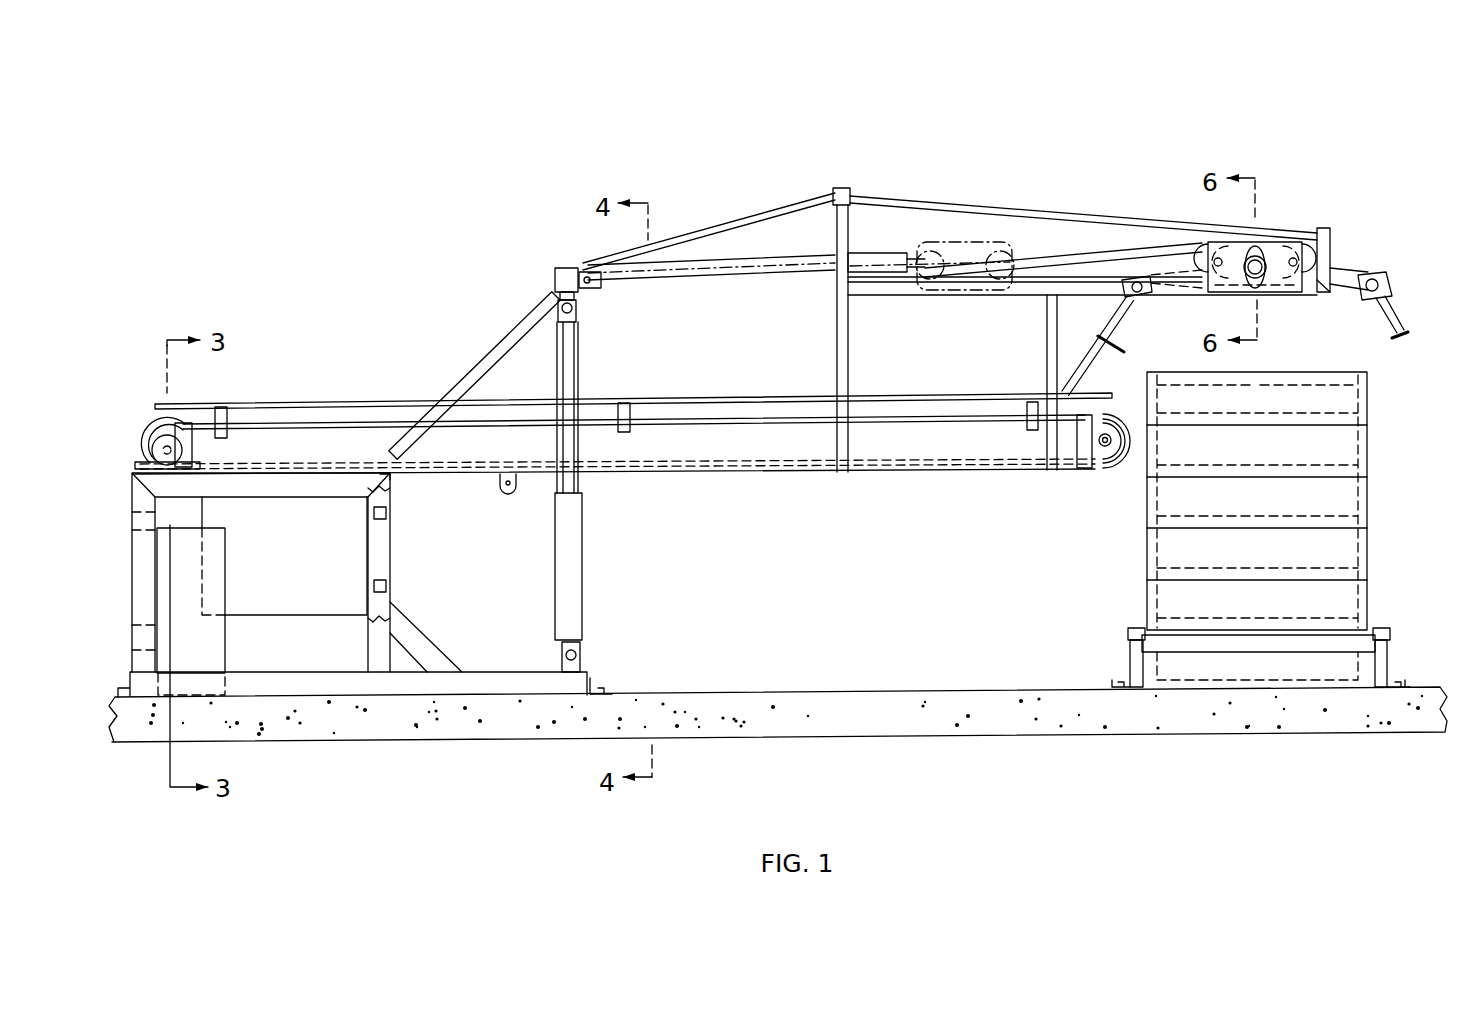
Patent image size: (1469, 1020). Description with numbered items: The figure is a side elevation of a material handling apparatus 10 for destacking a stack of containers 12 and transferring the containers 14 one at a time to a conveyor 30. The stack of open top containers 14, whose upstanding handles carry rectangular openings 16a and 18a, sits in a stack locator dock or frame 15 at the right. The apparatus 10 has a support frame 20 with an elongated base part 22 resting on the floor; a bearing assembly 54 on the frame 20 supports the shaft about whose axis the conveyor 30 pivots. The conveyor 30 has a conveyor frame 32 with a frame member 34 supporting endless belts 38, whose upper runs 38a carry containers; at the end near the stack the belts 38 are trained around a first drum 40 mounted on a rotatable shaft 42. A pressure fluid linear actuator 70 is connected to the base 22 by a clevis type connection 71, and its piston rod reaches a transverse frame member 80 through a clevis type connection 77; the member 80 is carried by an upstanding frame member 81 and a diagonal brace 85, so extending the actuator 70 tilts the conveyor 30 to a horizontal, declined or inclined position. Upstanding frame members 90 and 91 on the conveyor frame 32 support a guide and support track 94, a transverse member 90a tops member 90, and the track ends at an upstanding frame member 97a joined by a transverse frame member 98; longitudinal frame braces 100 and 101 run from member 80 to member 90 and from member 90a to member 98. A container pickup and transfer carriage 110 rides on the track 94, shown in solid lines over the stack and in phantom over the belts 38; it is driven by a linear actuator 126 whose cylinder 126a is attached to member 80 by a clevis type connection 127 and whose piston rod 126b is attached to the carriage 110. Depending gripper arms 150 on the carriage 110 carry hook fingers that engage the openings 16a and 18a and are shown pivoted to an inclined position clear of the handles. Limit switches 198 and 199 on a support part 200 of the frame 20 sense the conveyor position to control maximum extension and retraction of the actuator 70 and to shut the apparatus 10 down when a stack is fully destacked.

The material handling apparatus 10 is at (777, 186).
The stack of containers 12 is at (1272, 525).
The container 14 is at (1368, 433).
The stack locator dock or frame 15 is at (1130, 643).
The rectangular opening 16a is at (1160, 400).
The rectangular opening 18a is at (1355, 400).
The support frame 20 is at (313, 584).
The base part 22 is at (490, 672).
The endless belt type conveyor 30 is at (615, 499).
The conveyor frame 32 is at (685, 481).
The conveyor frame member 34 is at (918, 452).
The endless belt 38 is at (160, 432).
The upper run 38a is at (688, 404).
The first drum 40 is at (1086, 470).
The rotatable shaft 42 is at (1100, 442).
The bearing assembly 54 is at (150, 450).
The pressure fluid cylinder type linear actuator 70 is at (583, 584).
The clevis type connection 71 is at (583, 655).
The clevis type connection 77 is at (556, 300).
The transverse frame member 80 is at (565, 268).
The upstanding frame member 81 is at (580, 347).
The diagonal brace 85 is at (494, 357).
The upstanding frame member 90 is at (850, 335).
The transverse member 90a is at (842, 190).
The upstanding frame member 91 is at (1045, 316).
The guide and support track 94 is at (917, 262).
The upstanding frame member 97a is at (1330, 250).
The transverse frame member 98 is at (1322, 228).
The longitudinal frame brace 100 is at (738, 222).
The longitudinal frame brace 101 is at (946, 200).
The container pickup and transfer carriage 110 is at (1014, 238).
The pressure fluid cylinder and piston type linear actuator 126 is at (711, 276).
The cylinder 126a is at (735, 258).
The piston rod 126b is at (1073, 232).
The clevis type connection 127 is at (590, 296).
The depending gripper arm 150 is at (1116, 300).
The limit switch 198 is at (373, 514).
The limit switch 199 is at (373, 583).
The support part 200 is at (395, 573).